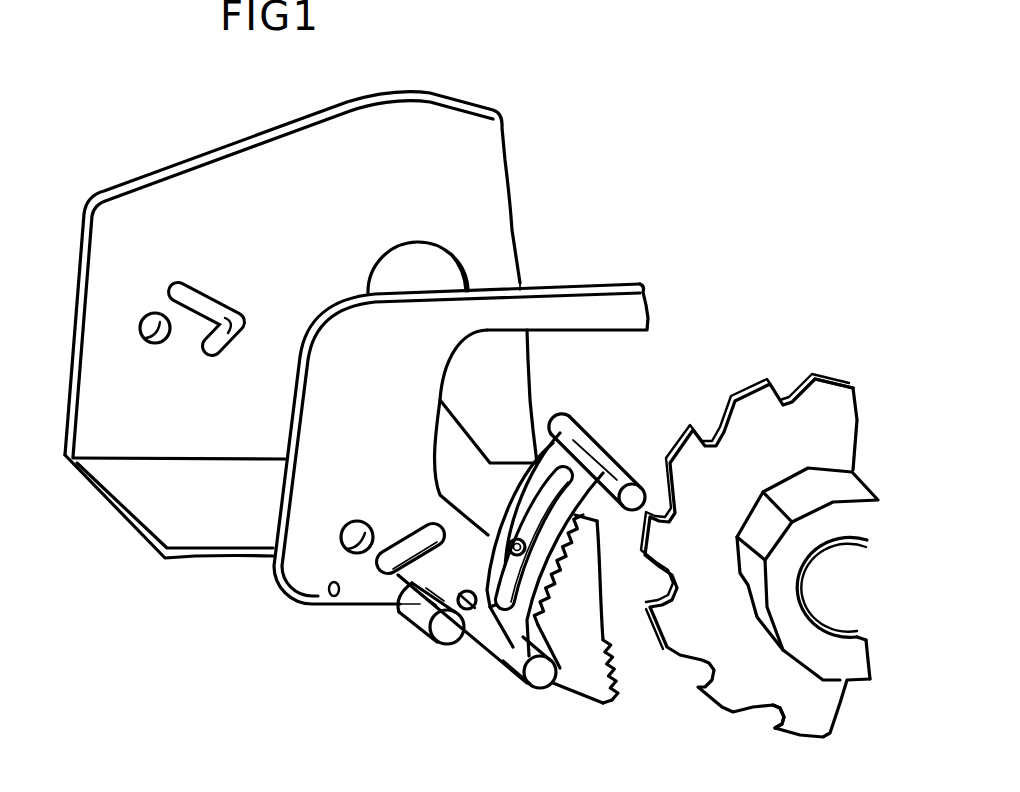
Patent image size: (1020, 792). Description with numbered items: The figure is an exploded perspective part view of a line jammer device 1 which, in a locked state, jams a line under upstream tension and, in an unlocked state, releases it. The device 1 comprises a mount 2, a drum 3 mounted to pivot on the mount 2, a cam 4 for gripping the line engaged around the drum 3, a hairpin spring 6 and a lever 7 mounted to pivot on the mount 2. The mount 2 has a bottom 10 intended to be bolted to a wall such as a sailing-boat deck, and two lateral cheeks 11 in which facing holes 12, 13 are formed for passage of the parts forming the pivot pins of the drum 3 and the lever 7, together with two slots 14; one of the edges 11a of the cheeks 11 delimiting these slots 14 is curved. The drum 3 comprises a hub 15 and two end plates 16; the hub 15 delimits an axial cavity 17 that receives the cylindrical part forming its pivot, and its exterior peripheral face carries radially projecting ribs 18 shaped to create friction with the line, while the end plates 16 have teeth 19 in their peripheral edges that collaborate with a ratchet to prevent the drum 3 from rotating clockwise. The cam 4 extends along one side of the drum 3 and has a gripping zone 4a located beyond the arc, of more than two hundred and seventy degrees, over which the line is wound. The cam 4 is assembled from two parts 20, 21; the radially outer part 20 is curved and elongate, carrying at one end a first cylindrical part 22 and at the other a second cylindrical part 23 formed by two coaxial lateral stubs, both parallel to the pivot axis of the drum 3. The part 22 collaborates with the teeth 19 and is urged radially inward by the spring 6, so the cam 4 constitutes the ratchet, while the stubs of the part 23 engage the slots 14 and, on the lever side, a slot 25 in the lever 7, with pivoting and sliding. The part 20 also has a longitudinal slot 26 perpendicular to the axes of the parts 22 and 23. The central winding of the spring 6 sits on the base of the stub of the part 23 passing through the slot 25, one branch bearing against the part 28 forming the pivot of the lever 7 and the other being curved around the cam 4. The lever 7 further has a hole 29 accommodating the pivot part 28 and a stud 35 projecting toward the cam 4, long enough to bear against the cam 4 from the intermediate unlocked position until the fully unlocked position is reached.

The line jammer device 1 is at (604, 232).
The mount 2 is at (173, 565).
The drum 3 is at (718, 706).
The cam 4 is at (573, 702).
The gripping zone 4a is at (607, 657).
The hairpin spring 6 is at (485, 512).
The lever 7 is at (590, 270).
The bottom 10 is at (160, 530).
The lateral cheeks 11 is at (220, 178).
The edge 11a is at (200, 305).
The hole 12 is at (423, 260).
The hole 13 is at (140, 337).
The slot 14 is at (243, 333).
The hub 15 is at (850, 660).
The end plates 16 is at (825, 403).
The axial cavity 17 is at (836, 576).
The ribs 18 is at (807, 552).
The teeth 19 is at (770, 722).
The part 20 is at (560, 570).
The part 21 is at (590, 677).
The first cylindrical part 22 is at (560, 420).
The second cylindrical part 23 is at (540, 678).
The slot 25 is at (413, 543).
The slot 26 is at (556, 478).
The part forming the pivot 28 is at (420, 607).
The hole 29 is at (347, 525).
The stud 35 is at (336, 596).